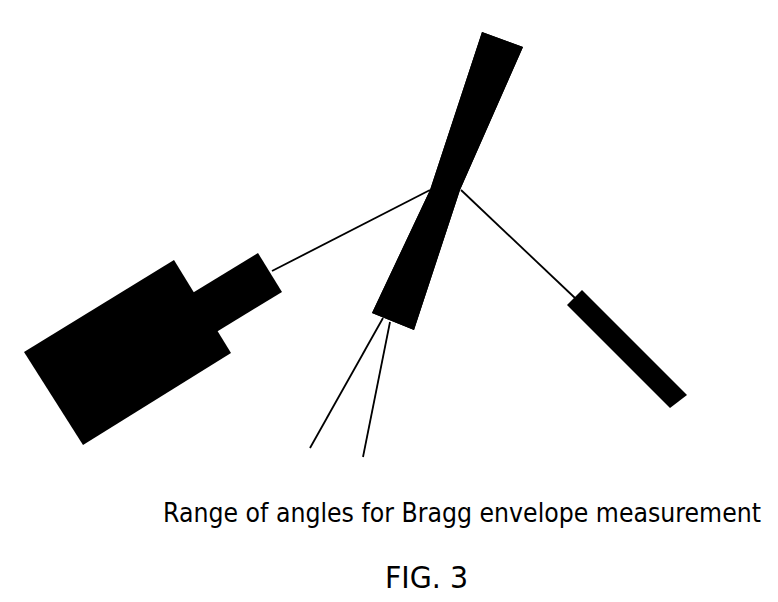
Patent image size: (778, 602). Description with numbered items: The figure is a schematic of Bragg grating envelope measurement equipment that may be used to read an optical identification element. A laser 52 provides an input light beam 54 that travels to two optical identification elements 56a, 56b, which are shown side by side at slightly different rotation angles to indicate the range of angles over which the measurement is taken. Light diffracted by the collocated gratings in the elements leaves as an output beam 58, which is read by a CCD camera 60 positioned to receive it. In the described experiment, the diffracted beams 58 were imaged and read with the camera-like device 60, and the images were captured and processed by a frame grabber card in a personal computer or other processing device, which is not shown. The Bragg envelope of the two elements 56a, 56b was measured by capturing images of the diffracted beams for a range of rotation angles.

The laser 52 is at (633, 342).
The input light beam 54 is at (516, 241).
The element 56a is at (522, 94).
The element 56b is at (466, 73).
The output beam 58 is at (364, 217).
The CCD camera 60 is at (115, 297).